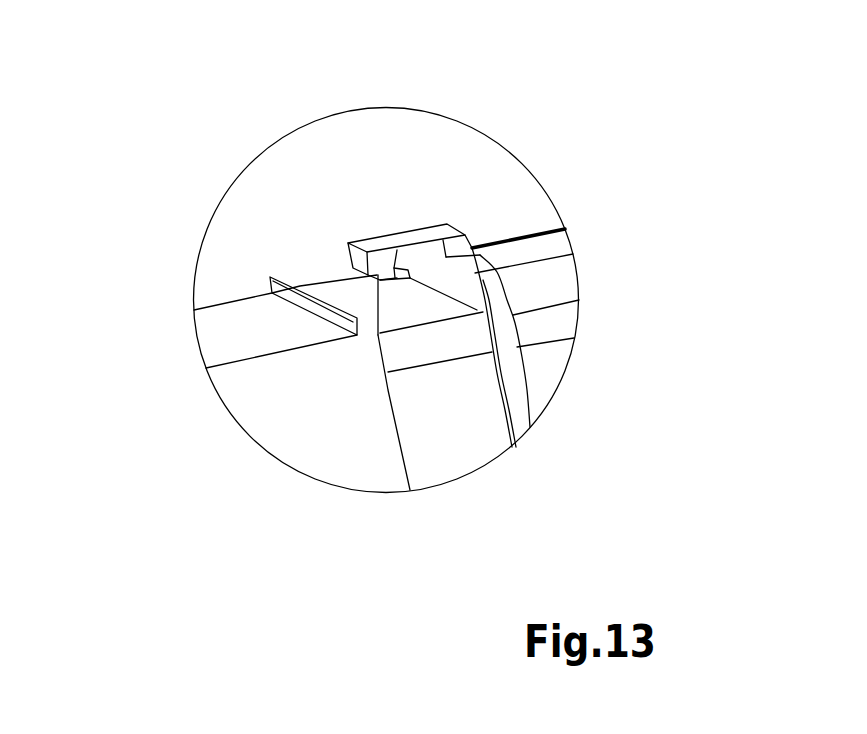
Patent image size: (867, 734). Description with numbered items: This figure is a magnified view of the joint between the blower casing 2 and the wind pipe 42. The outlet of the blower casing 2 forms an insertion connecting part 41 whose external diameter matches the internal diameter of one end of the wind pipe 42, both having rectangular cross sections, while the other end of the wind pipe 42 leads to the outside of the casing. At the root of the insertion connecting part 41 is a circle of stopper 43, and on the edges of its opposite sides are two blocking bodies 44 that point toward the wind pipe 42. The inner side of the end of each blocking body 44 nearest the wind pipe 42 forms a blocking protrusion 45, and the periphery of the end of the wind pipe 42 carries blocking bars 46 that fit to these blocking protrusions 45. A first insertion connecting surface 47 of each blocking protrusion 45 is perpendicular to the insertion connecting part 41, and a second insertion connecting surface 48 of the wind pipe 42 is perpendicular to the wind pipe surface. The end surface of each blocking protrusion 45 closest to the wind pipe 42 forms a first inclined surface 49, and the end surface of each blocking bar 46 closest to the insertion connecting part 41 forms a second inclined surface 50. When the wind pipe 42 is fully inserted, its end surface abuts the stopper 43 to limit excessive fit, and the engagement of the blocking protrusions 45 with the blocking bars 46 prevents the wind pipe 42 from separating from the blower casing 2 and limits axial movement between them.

The blower casing 2 is at (540, 290).
The insertion connecting part 41 is at (467, 417).
The wind pipe 42 is at (233, 348).
The stopper 43 is at (505, 350).
The blocking body 44 is at (422, 227).
The blocking protrusion 45 is at (372, 267).
The blocking bar 46 is at (271, 278).
The first insertion connecting surface 47 is at (333, 313).
The second insertion connecting surface 48 is at (382, 268).
The first inclined surface 49 is at (378, 345).
The second inclined surface 50 is at (378, 330).